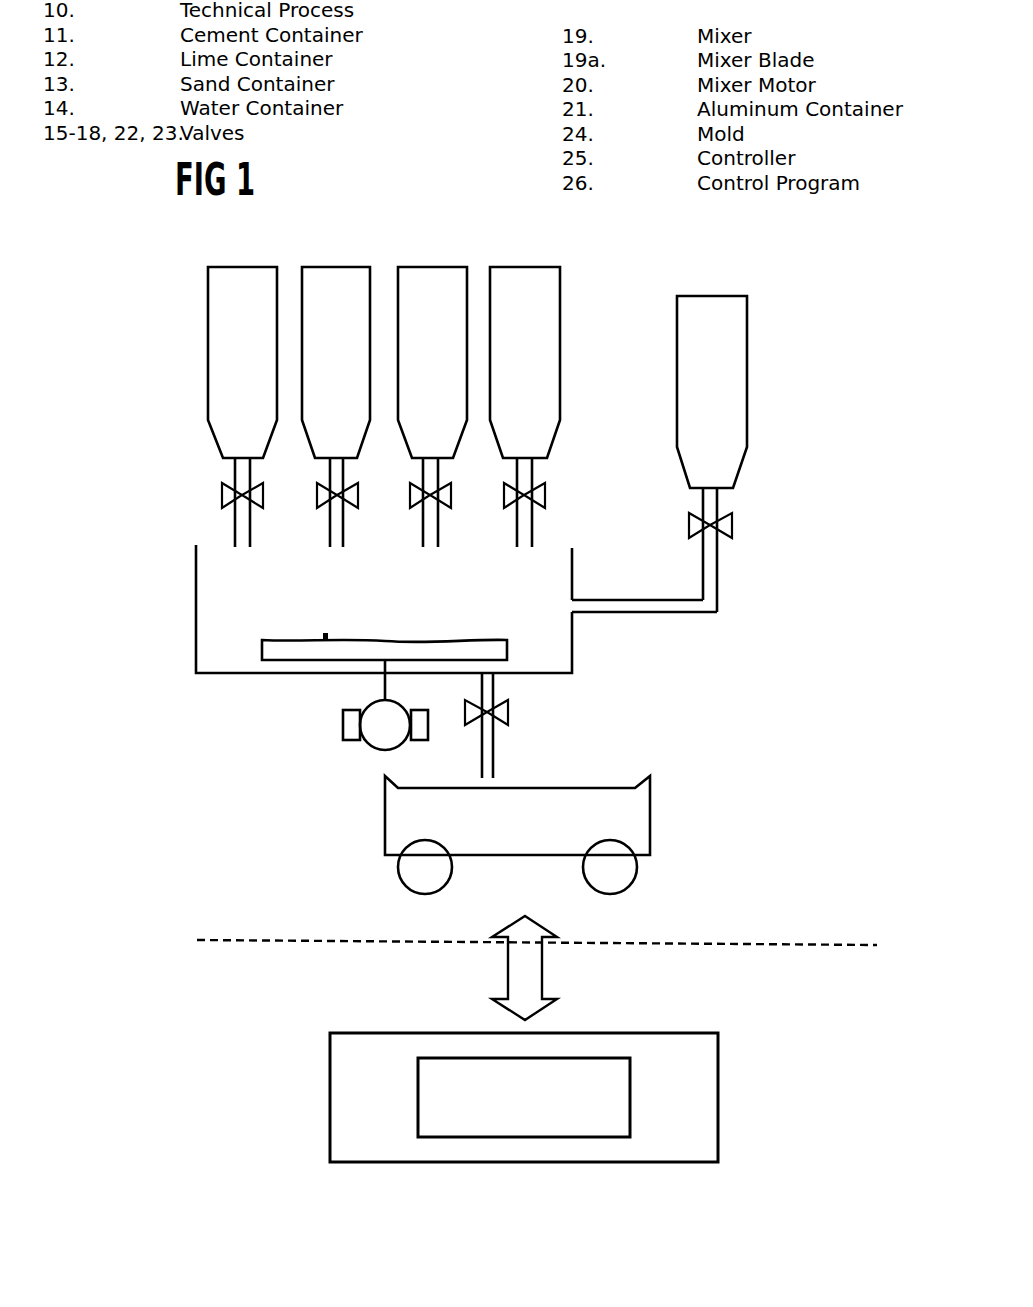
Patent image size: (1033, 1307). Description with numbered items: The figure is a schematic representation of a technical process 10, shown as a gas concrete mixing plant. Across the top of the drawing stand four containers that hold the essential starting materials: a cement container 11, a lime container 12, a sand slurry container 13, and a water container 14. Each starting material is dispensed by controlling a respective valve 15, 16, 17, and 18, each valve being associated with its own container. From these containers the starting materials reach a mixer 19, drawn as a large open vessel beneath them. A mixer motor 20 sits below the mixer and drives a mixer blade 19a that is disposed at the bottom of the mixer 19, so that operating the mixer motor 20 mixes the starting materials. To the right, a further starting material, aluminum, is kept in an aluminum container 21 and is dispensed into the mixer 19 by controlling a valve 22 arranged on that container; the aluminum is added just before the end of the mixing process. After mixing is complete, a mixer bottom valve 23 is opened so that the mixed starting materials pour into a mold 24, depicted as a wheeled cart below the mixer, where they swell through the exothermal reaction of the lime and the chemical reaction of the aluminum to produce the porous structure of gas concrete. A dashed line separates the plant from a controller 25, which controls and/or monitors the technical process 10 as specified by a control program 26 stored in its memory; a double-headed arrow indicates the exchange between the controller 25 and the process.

The technical process 10 is at (742, 704).
The cement container 11 is at (256, 348).
The lime container 12 is at (352, 348).
The sand slurry container 13 is at (447, 348).
The water container 14 is at (540, 348).
The valve 15 is at (263, 495).
The valve 16 is at (358, 495).
The valve 17 is at (451, 495).
The valve 18 is at (545, 495).
The mixer 19 is at (383, 649).
The mixer blade 19a is at (324, 628).
The mixer motor 20 is at (345, 740).
The aluminum container 21 is at (729, 380).
The valve 22 is at (733, 525).
The mixer bottom valve 23 is at (508, 712).
The mold 24 is at (650, 812).
The controller 25 is at (546, 1097).
The control program 26 is at (541, 1112).